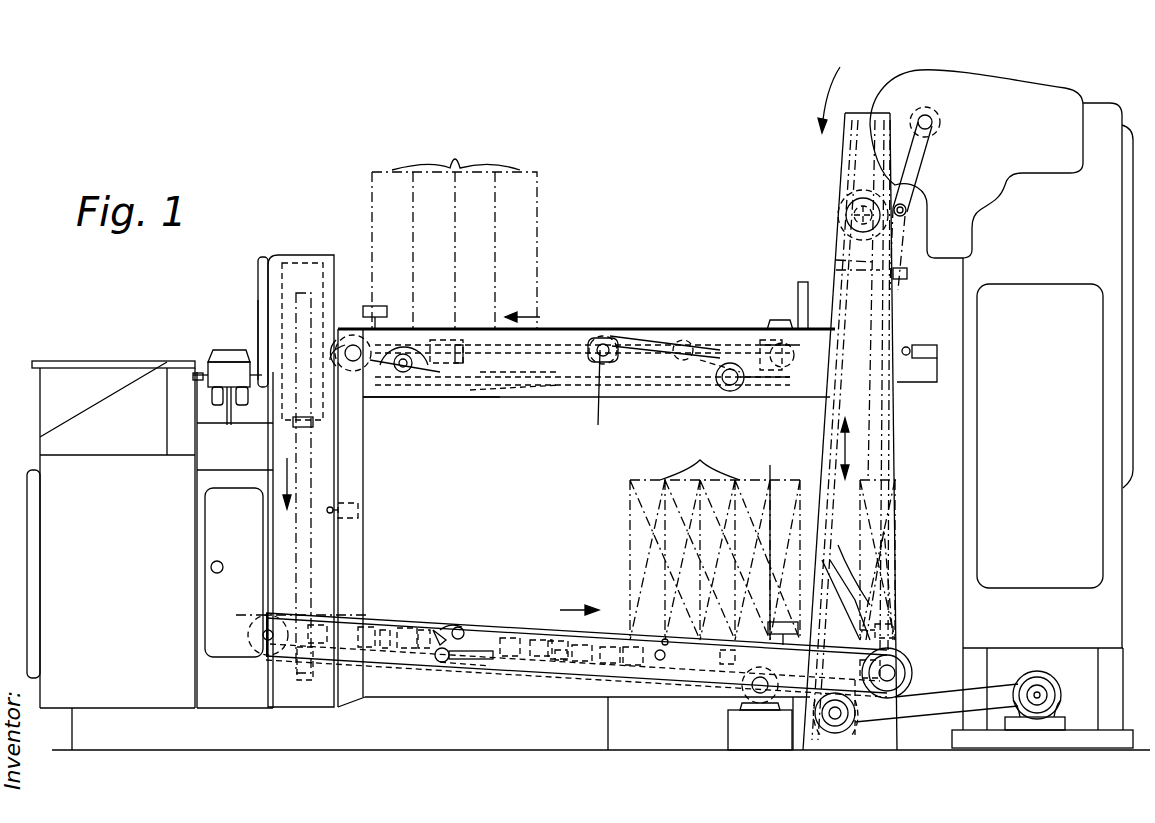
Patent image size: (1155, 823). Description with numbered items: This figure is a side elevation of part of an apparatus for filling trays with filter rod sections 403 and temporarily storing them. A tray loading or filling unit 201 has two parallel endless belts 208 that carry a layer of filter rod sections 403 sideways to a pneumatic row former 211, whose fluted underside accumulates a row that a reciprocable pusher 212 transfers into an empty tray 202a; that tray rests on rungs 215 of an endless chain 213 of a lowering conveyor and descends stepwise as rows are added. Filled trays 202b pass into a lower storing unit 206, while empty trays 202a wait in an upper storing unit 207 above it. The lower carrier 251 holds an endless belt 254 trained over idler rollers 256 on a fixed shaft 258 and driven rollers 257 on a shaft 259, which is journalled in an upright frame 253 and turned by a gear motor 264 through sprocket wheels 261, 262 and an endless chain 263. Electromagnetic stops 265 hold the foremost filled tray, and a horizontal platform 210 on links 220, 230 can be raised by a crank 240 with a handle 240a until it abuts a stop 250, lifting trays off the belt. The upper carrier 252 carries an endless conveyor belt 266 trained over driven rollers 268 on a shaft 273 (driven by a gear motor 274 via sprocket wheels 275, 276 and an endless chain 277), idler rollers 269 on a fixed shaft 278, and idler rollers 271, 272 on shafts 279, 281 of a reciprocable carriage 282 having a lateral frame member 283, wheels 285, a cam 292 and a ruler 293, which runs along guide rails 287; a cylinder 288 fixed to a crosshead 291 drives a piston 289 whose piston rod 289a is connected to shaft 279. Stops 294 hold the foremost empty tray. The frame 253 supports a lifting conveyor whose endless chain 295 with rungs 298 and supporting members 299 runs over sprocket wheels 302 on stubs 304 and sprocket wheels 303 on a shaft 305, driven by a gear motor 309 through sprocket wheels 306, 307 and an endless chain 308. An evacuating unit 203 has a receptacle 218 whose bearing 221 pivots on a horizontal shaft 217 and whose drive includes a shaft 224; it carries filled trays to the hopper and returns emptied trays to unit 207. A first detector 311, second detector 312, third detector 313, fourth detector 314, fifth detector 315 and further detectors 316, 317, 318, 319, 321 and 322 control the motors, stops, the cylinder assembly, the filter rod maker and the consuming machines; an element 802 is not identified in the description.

The tray loading or filling unit 201 is at (188, 332).
The empty trays 202a is at (283, 258).
The filled trays 202b is at (765, 540).
The evacuating unit 203 is at (967, 75).
The storing unit for filled trays 206 is at (525, 612).
The storing unit for empty trays 207 is at (619, 250).
The endless belts 208 is at (229, 410).
The horizontal platform 210 is at (571, 653).
The pneumatic row-forming device 211 is at (222, 350).
The reciprocable transfer member 212 is at (203, 373).
The endless chain 213 is at (304, 570).
The rung or platform 215 is at (313, 425).
The horizontal shaft 217 is at (940, 122).
The receptacle 218 is at (845, 180).
The link 220 is at (452, 650).
The bearing 221 is at (976, 154).
The shaft 224 is at (907, 200).
The link 230 is at (665, 645).
The lever or crank 240 is at (541, 668).
The handle 240a is at (580, 663).
The stop 250 is at (432, 620).
The carrier or base 251 is at (465, 677).
The carrier or base 252 is at (466, 398).
The upright frame 253 is at (893, 566).
The endless belt 254 is at (470, 610).
The idler rollers 256 is at (260, 612).
The driven rollers 257 is at (892, 640).
The horizontal shaft 258 is at (255, 653).
The horizontal shaft 259 is at (905, 668).
The sprocket wheel 261 is at (750, 690).
The sprocket wheel 262 is at (900, 658).
The endless chain 263 is at (905, 683).
The gear motor 264 is at (740, 712).
The retaining devices or stops 265 is at (766, 541).
The endless conveyor belt 266 is at (548, 386).
The driven rollers 268 is at (348, 362).
The idler rollers 269 is at (757, 397).
The idler roller 271 is at (630, 340).
The idler roller 272 is at (756, 364).
The horizontal shaft 273 is at (345, 375).
The gear motor 274 is at (420, 380).
The sprocket wheel 275 is at (430, 368).
The sprocket wheel 276 is at (353, 335).
The endless chain 277 is at (435, 340).
The horizontal shaft 278 is at (722, 388).
The shaft 279 is at (599, 397).
The shaft 281 is at (786, 366).
The reciprocable carriage or dolly 282 is at (580, 340).
The lateral frame member 283 is at (752, 306).
The wheels 285 is at (688, 340).
The guide rails 287 is at (600, 338).
The cylinder 288 is at (480, 360).
The piston 289 is at (505, 388).
The piston rod 289a is at (625, 370).
The traverse or crosshead 291 is at (462, 345).
The cam 292 is at (733, 330).
The ruler or cam 293 is at (835, 262).
The retaining devices or stops 294 is at (382, 306).
The endless chain 295 is at (877, 435).
The horizontal rung 298 is at (870, 560).
The supporting member 299 is at (870, 545).
The sprocket wheel 302 is at (848, 236).
The sprocket wheel 303 is at (825, 730).
The stub 304 is at (845, 217).
The horizontal shaft 305 is at (845, 722).
The sprocket wheel 306 is at (838, 733).
The sprocket wheel 307 is at (1048, 696).
The endless chain 308 is at (1013, 690).
The gear motor 309 is at (1048, 684).
The first detector 311 is at (902, 279).
The second detector 312 is at (920, 345).
The third detector 313 is at (895, 625).
The fourth detector 314 is at (816, 262).
The fifth detector 315 is at (314, 674).
The detector 316 is at (385, 650).
The detector 317 is at (555, 655).
The detector 318 is at (425, 650).
The detector 319 is at (720, 660).
The detector 321 is at (700, 675).
The detector 322 is at (358, 508).
The filter rod sections 403 is at (210, 390).
The post 802 is at (800, 460).